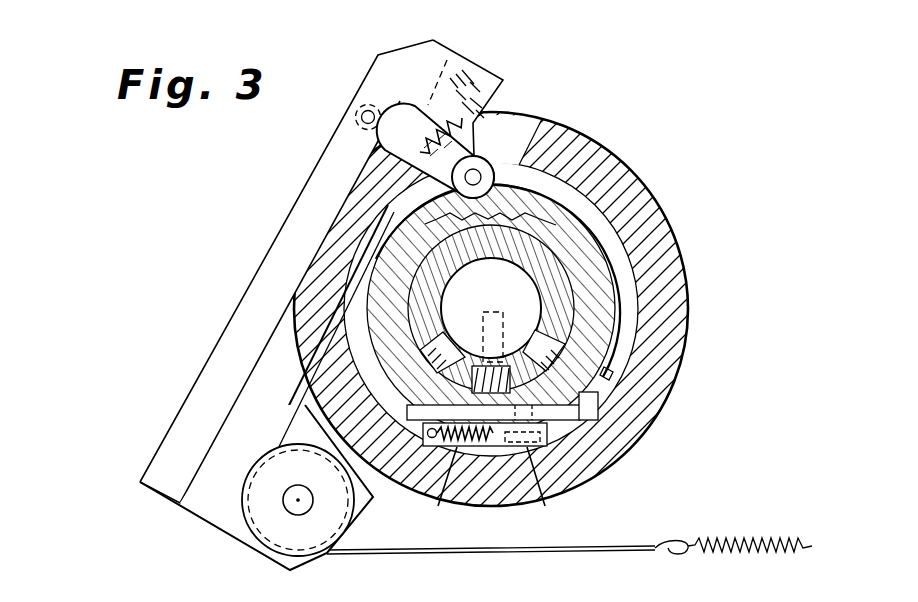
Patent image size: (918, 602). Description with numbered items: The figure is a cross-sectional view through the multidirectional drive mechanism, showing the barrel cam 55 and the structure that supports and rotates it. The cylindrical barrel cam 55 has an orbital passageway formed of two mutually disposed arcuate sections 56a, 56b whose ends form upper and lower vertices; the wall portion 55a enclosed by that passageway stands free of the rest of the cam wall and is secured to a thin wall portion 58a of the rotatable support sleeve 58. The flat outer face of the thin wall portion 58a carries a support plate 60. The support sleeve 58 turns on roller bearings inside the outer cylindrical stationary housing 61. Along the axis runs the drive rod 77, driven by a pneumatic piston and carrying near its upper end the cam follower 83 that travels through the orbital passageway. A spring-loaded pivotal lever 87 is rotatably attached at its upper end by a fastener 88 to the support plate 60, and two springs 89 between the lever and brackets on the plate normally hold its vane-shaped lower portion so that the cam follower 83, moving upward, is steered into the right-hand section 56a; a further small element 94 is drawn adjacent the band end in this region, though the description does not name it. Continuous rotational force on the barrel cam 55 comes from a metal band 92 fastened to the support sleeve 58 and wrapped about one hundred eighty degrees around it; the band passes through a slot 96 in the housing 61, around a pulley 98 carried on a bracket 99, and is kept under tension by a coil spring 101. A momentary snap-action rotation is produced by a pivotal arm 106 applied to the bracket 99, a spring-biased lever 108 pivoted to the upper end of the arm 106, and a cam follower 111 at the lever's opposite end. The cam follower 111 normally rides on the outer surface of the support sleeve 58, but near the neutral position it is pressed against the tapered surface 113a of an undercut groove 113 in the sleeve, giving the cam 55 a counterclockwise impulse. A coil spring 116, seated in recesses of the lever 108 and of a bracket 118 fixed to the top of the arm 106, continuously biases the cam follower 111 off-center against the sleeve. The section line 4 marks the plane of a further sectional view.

The section line 4- 4 is at (463, 140).
The barrel cam 55 is at (425, 307).
The wall portion of the barrel cam 55a is at (570, 424).
The arcuate section of the orbital passageway 56a is at (602, 374).
The arcuate section of the orbital passageway 56b is at (433, 363).
The rotatable support sleeve 58 is at (373, 275).
The thin wall portion of the support sleeve 58a is at (448, 491).
The support plate 60 is at (618, 418).
The stationary housing 61 is at (690, 300).
The drive rod 77 is at (535, 302).
The cam follower 83 is at (498, 345).
The pivotal lever 87 is at (541, 491).
The fastener 88 is at (540, 446).
The spring 89 is at (452, 446).
The spring-biased band 92 is at (620, 284).
The pin 94 is at (612, 379).
The slot 96 is at (300, 378).
The pulley 98 is at (272, 470).
The bracket 99 is at (215, 512).
The coil spring 101 is at (737, 537).
The pivotal arm 106 is at (276, 246).
The spring-biased lever 108 is at (410, 133).
The cam follower 111 is at (494, 176).
The undercut groove 113 is at (535, 173).
The tapered surface 113a is at (492, 222).
The coil spring 116 is at (493, 102).
The bracket 118 is at (478, 68).